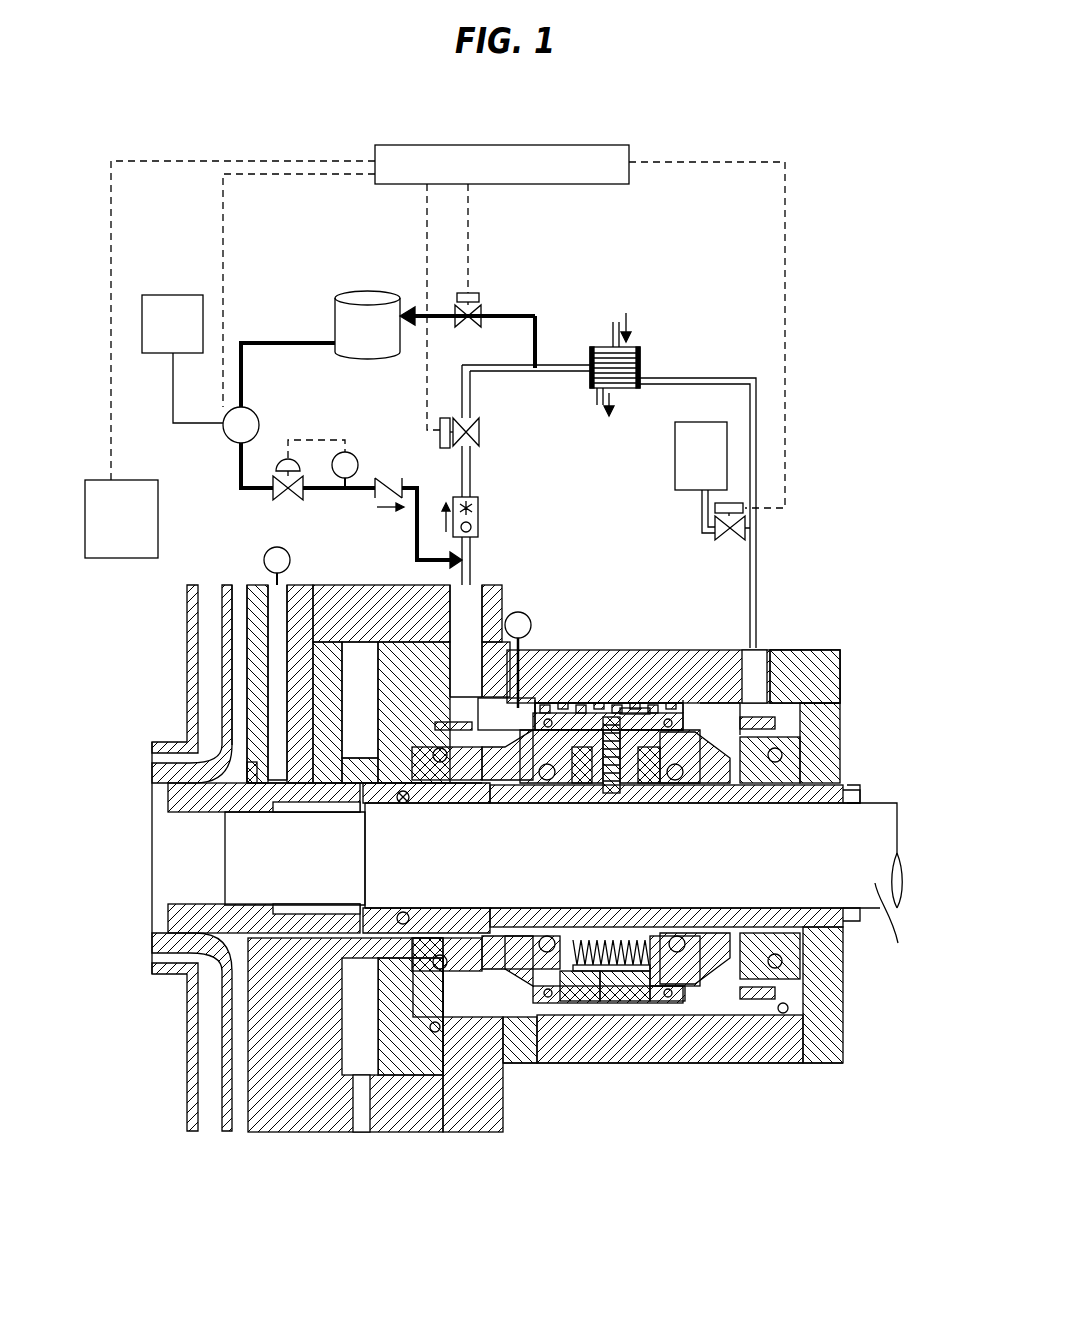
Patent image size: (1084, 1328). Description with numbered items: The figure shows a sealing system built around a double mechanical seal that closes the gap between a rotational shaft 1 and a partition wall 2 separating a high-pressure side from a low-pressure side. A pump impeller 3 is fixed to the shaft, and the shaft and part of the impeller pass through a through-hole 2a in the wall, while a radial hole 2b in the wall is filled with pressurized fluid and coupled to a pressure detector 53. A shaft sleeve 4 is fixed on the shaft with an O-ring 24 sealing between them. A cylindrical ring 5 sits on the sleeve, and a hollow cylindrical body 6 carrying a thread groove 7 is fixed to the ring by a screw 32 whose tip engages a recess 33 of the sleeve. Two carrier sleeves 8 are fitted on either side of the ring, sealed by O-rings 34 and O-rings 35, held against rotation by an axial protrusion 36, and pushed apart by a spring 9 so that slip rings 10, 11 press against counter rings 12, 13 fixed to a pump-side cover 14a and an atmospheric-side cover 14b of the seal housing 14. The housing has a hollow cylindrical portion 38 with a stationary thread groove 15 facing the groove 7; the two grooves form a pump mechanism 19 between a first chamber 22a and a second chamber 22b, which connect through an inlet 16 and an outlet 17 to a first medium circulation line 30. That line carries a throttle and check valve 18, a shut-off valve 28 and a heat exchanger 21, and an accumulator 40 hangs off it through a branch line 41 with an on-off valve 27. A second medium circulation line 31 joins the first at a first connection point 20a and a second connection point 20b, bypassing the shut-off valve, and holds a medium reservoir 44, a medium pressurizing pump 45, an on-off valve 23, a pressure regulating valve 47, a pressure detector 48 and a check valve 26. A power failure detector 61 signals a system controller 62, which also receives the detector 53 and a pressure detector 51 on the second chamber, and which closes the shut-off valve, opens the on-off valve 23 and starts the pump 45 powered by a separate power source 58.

The rotational shaft 1 is at (636, 885).
The partition wall 2 is at (300, 1135).
The through-hole 2a is at (300, 813).
The radial hole 2b is at (275, 626).
The pump impeller 3 is at (183, 675).
The shaft sleeve 4 is at (855, 928).
The cylindrical ring 5 is at (628, 790).
The hollow cylindrical body 6 is at (608, 1015).
The thread groove 7 is at (638, 1015).
The carrier sleeve 8 is at (560, 785).
The spring 9 is at (632, 940).
The slip ring 10 is at (492, 783).
The slip ring 11 is at (720, 783).
The counter ring 12 is at (442, 783).
The counter ring 13 is at (766, 783).
The seal housing 14 is at (740, 1072).
The pump-side cover 14a is at (400, 598).
The atmospheric-side cover 14b is at (845, 690).
The thread groove 15 is at (675, 1015).
The inlet 16 is at (757, 650).
The outlet 17 is at (478, 597).
The throttle and check valve 18 is at (480, 509).
The pump mechanism 19 is at (597, 690).
The first connection point 20a is at (526, 373).
The second connection point 20b is at (473, 545).
The heat exchanger 21 is at (645, 358).
The first chamber 22a is at (720, 720).
The second chamber 22b is at (506, 714).
The on-off valve 23 is at (490, 300).
The O-ring 24 is at (403, 804).
The check valve 26 is at (388, 478).
The on-off valve 27 is at (712, 540).
The shut-off valve 28 is at (482, 440).
The first medium circulation line 30 is at (708, 378).
The second medium circulation line 31 is at (270, 341).
The screw 32 is at (580, 790).
The recess 33 is at (612, 795).
The O-rings 34 is at (580, 702).
The O-rings 35 is at (545, 783).
The axial protrusion 36 is at (650, 703).
The hollow cylindrical portion 38 is at (552, 1065).
The accumulator 40 is at (675, 458).
The branch line 41 is at (702, 507).
The medium reservoir 44 is at (368, 291).
The medium pressurizing pump 45 is at (258, 412).
The pressure regulating valve 47 is at (285, 462).
The pressure detector 48 is at (350, 451).
The pressure detector 51 is at (530, 615).
The pressure detector 53 is at (265, 557).
The power source 58 is at (163, 293).
The power failure detector 61 is at (158, 520).
The system controller 62 is at (503, 143).